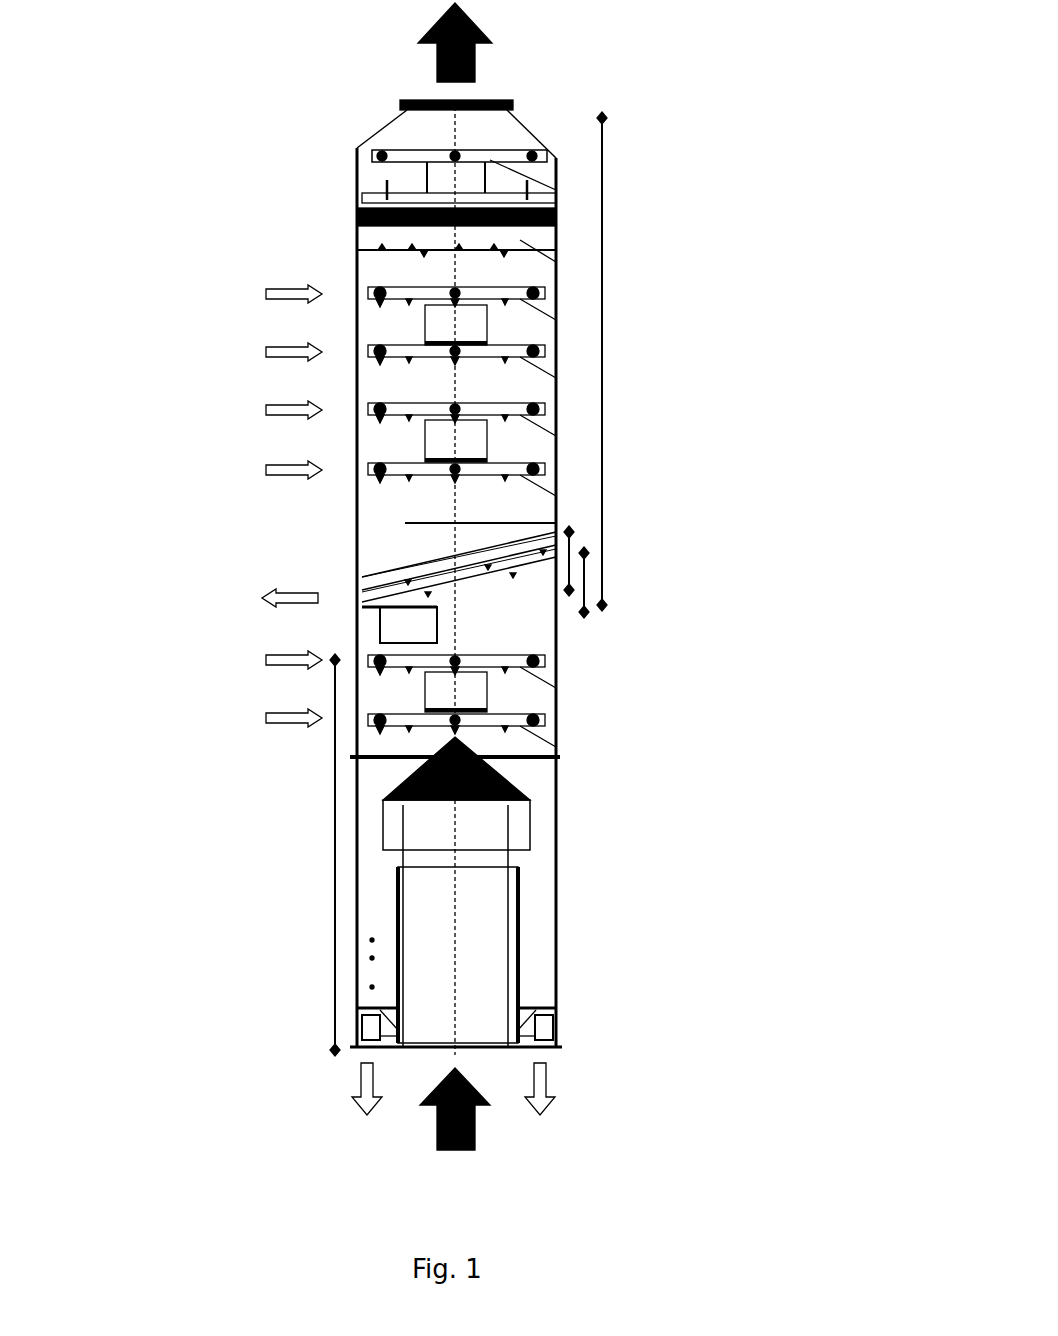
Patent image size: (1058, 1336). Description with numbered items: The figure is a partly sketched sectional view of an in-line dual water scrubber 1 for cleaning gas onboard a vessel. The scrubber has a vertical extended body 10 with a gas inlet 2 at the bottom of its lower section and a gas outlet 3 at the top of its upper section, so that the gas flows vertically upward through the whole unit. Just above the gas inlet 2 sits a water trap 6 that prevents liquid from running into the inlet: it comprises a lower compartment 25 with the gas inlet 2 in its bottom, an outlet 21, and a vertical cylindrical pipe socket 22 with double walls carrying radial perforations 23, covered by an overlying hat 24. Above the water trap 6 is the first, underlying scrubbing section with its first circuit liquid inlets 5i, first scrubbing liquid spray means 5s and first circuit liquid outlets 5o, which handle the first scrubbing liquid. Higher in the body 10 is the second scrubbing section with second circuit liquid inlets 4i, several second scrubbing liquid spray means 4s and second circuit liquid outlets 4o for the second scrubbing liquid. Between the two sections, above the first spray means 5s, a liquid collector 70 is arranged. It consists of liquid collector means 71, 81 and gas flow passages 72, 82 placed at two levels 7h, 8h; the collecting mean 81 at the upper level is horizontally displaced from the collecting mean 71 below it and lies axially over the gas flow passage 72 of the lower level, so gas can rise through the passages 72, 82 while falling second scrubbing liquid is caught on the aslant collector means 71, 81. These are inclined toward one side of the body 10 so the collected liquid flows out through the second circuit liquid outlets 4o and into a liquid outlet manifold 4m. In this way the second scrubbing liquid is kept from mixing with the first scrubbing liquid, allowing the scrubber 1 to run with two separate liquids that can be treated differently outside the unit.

The in-line dual water scrubber 1 is at (675, 262).
The gas inlet 2 is at (490, 1068).
The gas outlet 3 is at (493, 95).
The second circuit liquid inlets 4i is at (255, 473).
The second circuit liquid outlets 4o is at (268, 589).
The liquid outlet manifold 4m is at (375, 628).
The second scrubbing liquid spray means 4s is at (512, 457).
The first circuit liquid inlets 5i is at (255, 720).
The first circuit liquid outlets 5o is at (466, 1115).
The first scrubbing liquid spray means 5s is at (503, 662).
The water trap 6 is at (540, 782).
The level 7h is at (585, 597).
The level 8h is at (578, 544).
The vertical extended body 10 is at (563, 414).
The outlet 21 is at (530, 914).
The vertical directed cylindrical pipe socket 22 is at (456, 825).
The radial directed perforations 23 is at (455, 926).
The overlying hat 24 is at (475, 783).
The lower compartment 25 is at (456, 1024).
The liquid collector 70 is at (500, 561).
The liquid collector means 71 is at (459, 567).
The gas flow passage 72 is at (459, 560).
The liquid collector means 81 is at (459, 579).
The gas flow passage 82 is at (459, 573).